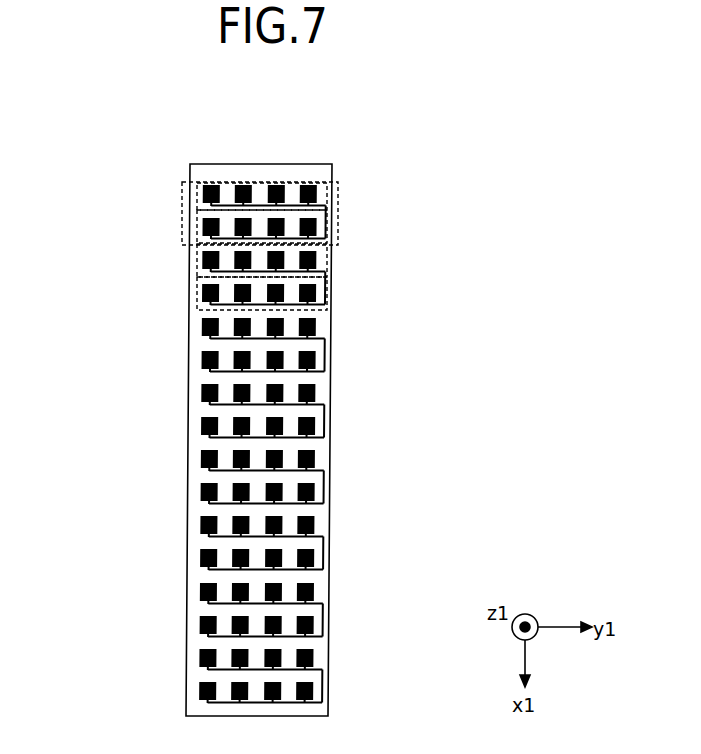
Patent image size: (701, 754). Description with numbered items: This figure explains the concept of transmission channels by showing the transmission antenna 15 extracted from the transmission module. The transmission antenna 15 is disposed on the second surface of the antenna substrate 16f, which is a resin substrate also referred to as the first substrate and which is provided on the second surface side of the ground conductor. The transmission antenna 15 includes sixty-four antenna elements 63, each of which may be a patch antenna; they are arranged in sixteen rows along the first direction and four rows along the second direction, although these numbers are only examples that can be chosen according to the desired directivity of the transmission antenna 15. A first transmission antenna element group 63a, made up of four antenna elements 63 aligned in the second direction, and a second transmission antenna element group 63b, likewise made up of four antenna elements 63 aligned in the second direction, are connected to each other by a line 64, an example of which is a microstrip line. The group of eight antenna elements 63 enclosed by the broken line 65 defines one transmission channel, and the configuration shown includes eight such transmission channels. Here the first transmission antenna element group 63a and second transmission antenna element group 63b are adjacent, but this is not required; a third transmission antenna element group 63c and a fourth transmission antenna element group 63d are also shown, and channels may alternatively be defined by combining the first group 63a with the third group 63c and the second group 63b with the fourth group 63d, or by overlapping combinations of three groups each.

The transmission antenna 15 is at (146, 131).
The antenna substrate 16f is at (324, 712).
The antenna element 63 is at (199, 222).
The first transmission antenna element group 63a is at (198, 192).
The second transmission antenna element group 63b is at (327, 226).
The third transmission antenna element group 63c is at (199, 262).
The fourth transmission antenna element group 63d is at (199, 295).
The line 64 is at (261, 207).
The broken line 65 is at (338, 212).